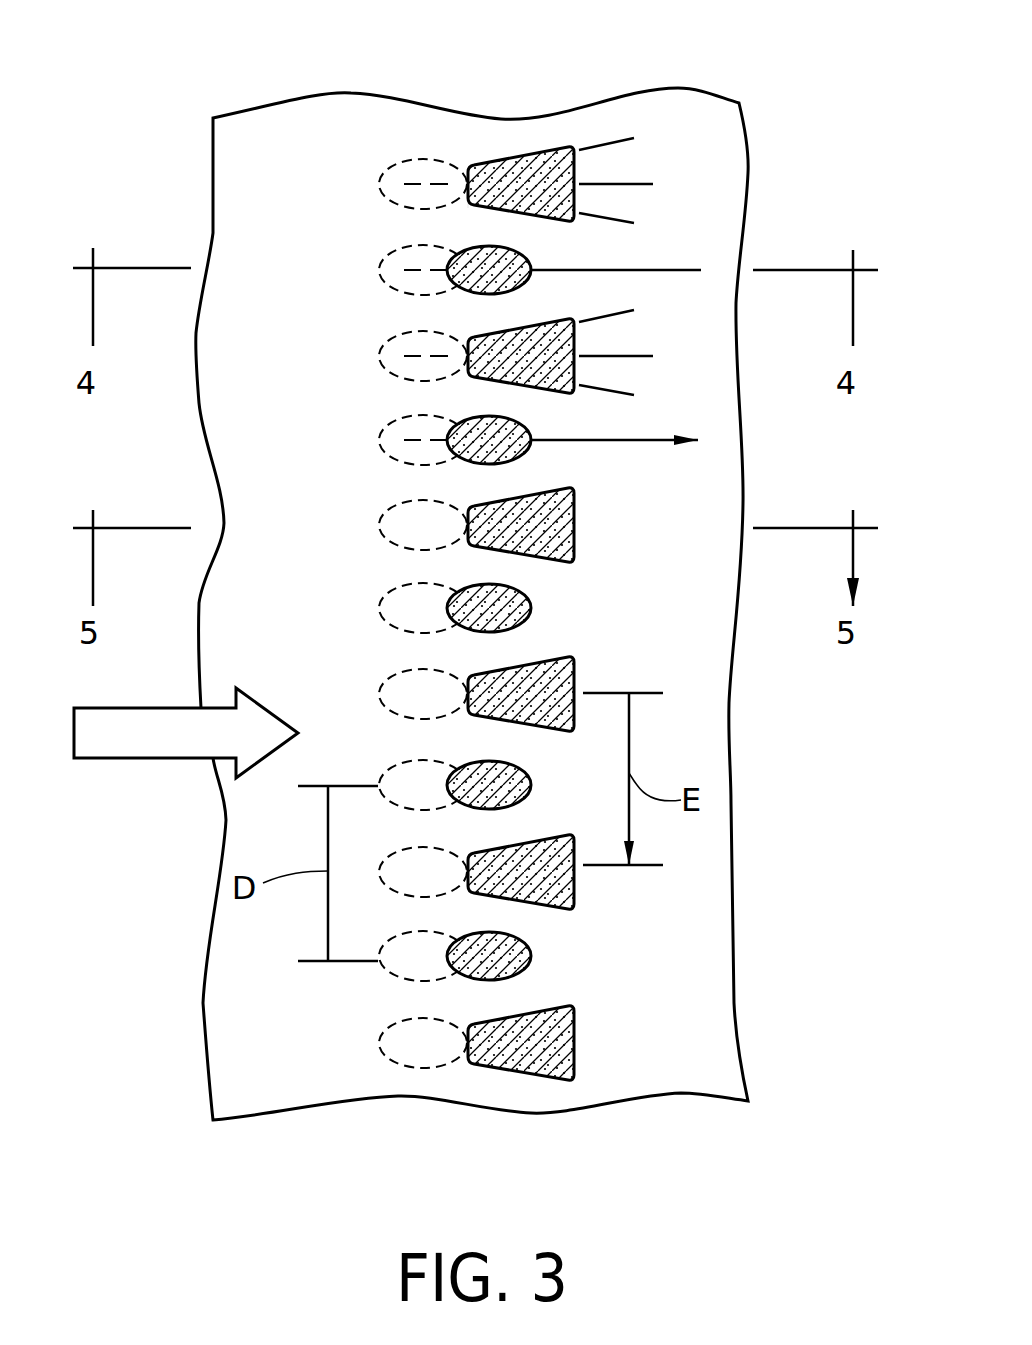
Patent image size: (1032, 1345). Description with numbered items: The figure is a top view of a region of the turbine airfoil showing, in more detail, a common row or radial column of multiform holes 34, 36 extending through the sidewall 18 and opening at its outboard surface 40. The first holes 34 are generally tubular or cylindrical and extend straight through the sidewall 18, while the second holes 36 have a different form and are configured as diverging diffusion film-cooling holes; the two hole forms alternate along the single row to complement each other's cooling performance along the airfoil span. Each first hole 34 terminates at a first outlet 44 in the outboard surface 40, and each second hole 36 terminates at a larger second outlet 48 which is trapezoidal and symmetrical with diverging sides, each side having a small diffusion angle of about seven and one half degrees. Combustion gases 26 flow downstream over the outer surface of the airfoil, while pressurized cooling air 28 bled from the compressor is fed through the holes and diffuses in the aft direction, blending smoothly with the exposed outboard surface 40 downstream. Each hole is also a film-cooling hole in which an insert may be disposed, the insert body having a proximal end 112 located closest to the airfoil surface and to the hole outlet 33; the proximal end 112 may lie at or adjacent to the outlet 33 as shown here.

The sidewall 18 is at (638, 88).
The outboard surface 40 is at (253, 170).
The outlet 33 is at (492, 157).
The proximal end 112 is at (478, 246).
The first holes 34 is at (470, 292).
The second holes 36 is at (475, 375).
The cooling air 28 is at (648, 437).
The second outlet 48 is at (580, 513).
The first outlet 44 is at (533, 603).
The combustion gases 26 is at (150, 755).